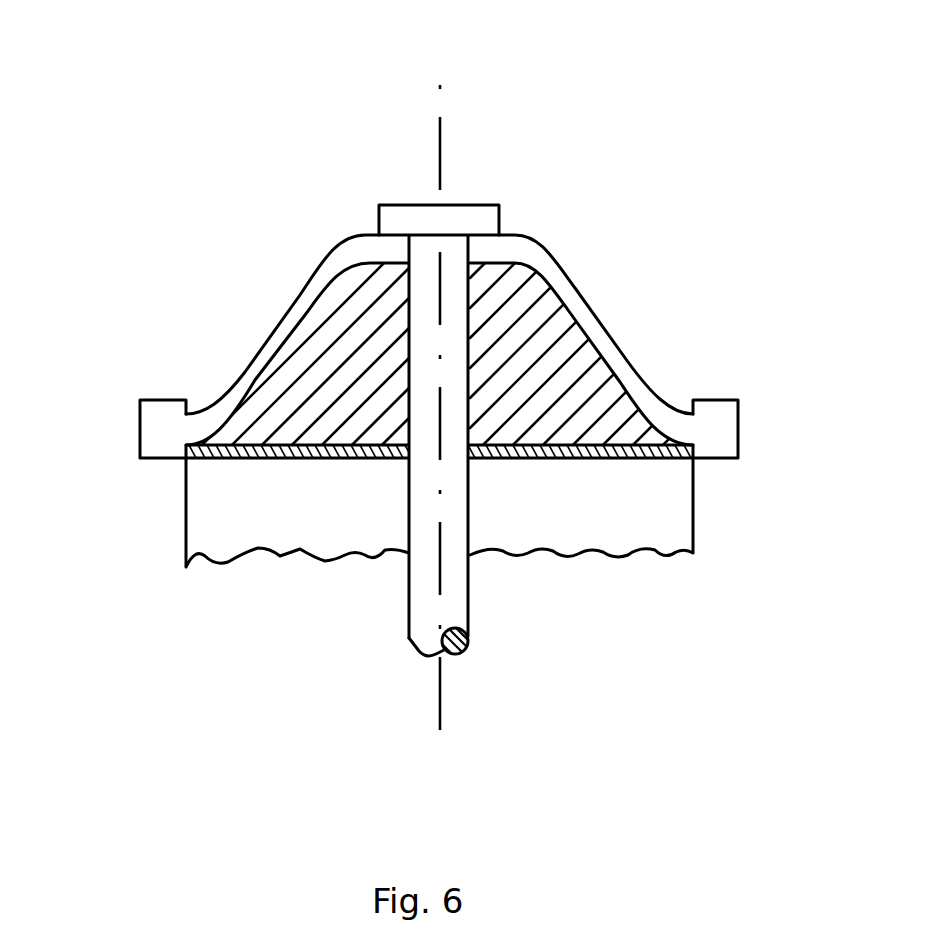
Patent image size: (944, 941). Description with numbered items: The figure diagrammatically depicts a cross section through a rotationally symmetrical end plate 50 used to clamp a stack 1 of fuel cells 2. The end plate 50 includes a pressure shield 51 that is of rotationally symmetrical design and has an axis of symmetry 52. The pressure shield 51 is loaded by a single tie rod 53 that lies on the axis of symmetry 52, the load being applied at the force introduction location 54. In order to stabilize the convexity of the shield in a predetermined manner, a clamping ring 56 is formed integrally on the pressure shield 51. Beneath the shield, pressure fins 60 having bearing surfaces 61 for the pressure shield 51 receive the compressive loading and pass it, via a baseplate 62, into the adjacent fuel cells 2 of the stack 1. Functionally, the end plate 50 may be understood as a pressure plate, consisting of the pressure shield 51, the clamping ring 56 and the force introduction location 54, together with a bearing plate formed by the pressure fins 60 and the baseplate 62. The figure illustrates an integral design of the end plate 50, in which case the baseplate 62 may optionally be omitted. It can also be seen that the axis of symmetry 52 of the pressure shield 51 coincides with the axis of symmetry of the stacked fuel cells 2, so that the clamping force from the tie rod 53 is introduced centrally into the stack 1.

The stack 1 is at (452, 369).
The fuel cells 2 is at (722, 497).
The end plate 50 is at (212, 362).
The pressure shield 51 is at (637, 391).
The axis of symmetry 52 is at (440, 135).
The tie rod 53 is at (452, 595).
The force introduction location 54 is at (519, 215).
The clamping ring 56 is at (722, 428).
The pressure fins 60 is at (305, 380).
The bearing surfaces 61 is at (584, 334).
The baseplate 62 is at (230, 460).